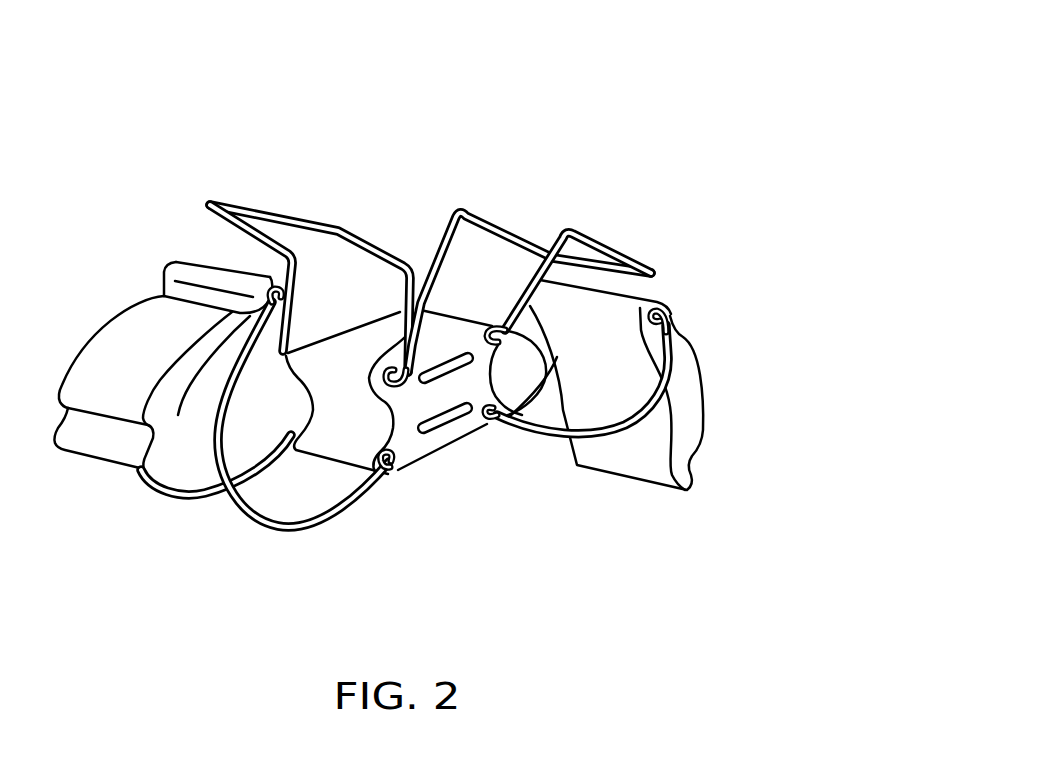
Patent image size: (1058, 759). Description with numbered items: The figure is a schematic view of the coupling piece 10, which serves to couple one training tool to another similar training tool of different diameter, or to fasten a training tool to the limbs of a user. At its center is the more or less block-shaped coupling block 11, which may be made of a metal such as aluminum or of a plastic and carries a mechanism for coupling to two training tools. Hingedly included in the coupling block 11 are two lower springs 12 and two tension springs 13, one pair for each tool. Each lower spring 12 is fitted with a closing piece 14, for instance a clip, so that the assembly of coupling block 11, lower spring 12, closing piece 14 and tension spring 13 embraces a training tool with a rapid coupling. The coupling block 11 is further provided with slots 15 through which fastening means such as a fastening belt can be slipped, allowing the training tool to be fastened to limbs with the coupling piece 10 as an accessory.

The coupling piece 10 is at (412, 307).
The coupling block 11 is at (415, 447).
The lower spring 12 is at (258, 523).
The tension spring 13 is at (275, 217).
The closing piece 14 is at (102, 448).
The slot 15 is at (445, 375).